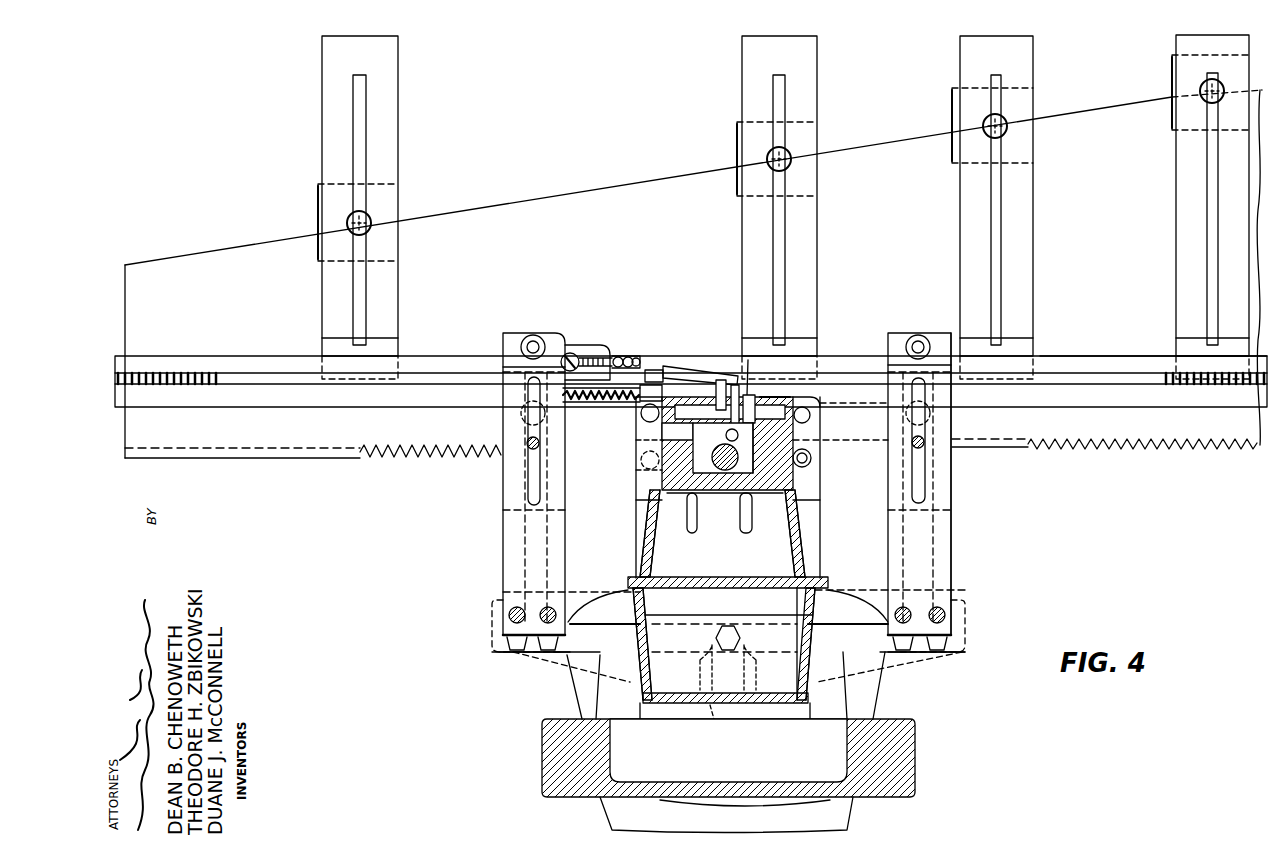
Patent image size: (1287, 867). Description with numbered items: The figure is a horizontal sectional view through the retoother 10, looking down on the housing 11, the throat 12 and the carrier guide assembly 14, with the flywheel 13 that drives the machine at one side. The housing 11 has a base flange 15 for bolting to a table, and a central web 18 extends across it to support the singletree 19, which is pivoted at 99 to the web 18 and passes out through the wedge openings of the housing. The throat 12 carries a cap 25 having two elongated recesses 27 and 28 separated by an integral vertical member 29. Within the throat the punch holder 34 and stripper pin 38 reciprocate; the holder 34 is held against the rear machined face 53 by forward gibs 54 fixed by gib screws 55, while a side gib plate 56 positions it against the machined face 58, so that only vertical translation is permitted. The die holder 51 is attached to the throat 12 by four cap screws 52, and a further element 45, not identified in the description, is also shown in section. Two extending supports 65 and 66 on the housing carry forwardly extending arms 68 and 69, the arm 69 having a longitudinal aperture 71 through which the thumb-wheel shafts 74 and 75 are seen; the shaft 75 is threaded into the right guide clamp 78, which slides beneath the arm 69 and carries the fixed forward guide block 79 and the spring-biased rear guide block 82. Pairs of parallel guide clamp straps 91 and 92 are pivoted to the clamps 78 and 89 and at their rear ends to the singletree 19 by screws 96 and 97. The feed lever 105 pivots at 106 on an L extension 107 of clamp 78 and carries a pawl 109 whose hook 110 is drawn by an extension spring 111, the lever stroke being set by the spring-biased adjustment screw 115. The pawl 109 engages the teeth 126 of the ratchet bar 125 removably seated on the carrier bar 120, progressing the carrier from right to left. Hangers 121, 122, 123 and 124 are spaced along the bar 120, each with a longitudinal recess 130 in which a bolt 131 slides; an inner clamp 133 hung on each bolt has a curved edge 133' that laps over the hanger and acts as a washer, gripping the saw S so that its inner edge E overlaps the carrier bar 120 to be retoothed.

The retoother 10 is at (892, 702).
The housing 11 is at (784, 712).
The throat 12 is at (805, 551).
The flywheel 13 is at (922, 780).
The carrier guide assembly 14 is at (444, 352).
The base flange 15 is at (572, 676).
The central web 18 is at (711, 705).
The singletree 19 is at (607, 648).
The cap 25 is at (785, 398).
The elongated recess 27 is at (751, 410).
The elongated recess 28 is at (703, 404).
The integral vertical member 29 is at (720, 412).
The punch holder 34 is at (750, 475).
The stripper pin 38 is at (742, 480).
The main shaft 45 is at (727, 470).
The die holder 51 is at (648, 472).
The cap screws 52 is at (645, 460).
The rear machined face 53 is at (704, 495).
The forward gibs 54 is at (748, 360).
The gib screws 55 is at (735, 422).
The side gib plate 56 is at (662, 431).
The machined face 58 is at (810, 417).
The extending support 65 is at (858, 594).
The extending support 66 is at (600, 592).
The forwardly extending arm 68 is at (950, 556).
The forwardly extending arm 69 is at (510, 548).
The longitudinal aperture 71 is at (531, 482).
The shaft 74 is at (924, 445).
The shaft 75 is at (529, 447).
The right guide clamp 78 is at (508, 336).
The forward guide block 79 is at (527, 338).
The rear guide block 82 is at (518, 414).
The guide clamp 89 is at (893, 332).
The guide clamp strap 91 is at (503, 578).
The guide clamp strap 92 is at (558, 554).
The screw 96 is at (512, 651).
The screw 97 is at (548, 651).
The pivot 99 is at (730, 624).
The feed lever 105 is at (675, 367).
The pivot 106 is at (624, 357).
The L extension 107 is at (588, 345).
The pawl 109 is at (665, 353).
The hook 110 is at (645, 390).
The extension spring 111 is at (602, 398).
The adjustment screw 115 is at (568, 352).
The carrier bar 120 is at (1130, 355).
The hanger 121 is at (1178, 187).
The hanger 122 is at (1027, 222).
The hanger 123 is at (812, 238).
The hanger 124 is at (385, 92).
The ratchet bar 125 is at (1113, 385).
The teeth 126 is at (1212, 385).
The longitudinal recess 130 is at (774, 213).
The bolt 131 is at (790, 152).
The inner clamp 133 is at (783, 150).
The curved edge 133' is at (745, 158).
The saw S is at (634, 183).
The inner edge E is at (313, 459).